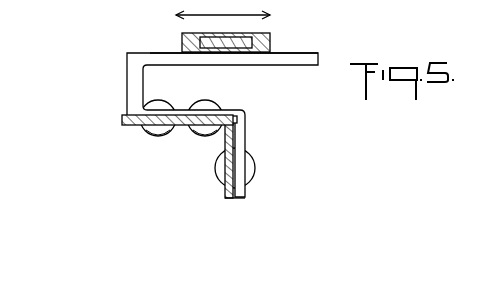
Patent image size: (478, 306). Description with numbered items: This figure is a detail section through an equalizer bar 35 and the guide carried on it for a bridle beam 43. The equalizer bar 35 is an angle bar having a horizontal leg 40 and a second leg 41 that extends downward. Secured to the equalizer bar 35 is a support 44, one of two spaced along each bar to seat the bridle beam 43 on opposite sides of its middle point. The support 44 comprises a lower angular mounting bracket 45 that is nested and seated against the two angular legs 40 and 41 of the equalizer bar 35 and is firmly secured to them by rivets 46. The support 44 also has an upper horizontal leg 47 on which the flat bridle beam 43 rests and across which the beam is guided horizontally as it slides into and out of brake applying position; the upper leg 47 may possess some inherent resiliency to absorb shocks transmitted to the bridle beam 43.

The equalizer bar 35 is at (219, 205).
The horizontal leg 40 is at (124, 121).
The leg 41 is at (226, 187).
The bridle beam 43 is at (183, 38).
The support 44 is at (126, 73).
The lower angular mounting bracket 45 is at (247, 136).
The rivets 46 is at (217, 160).
The upper horizontal leg 47 is at (293, 53).